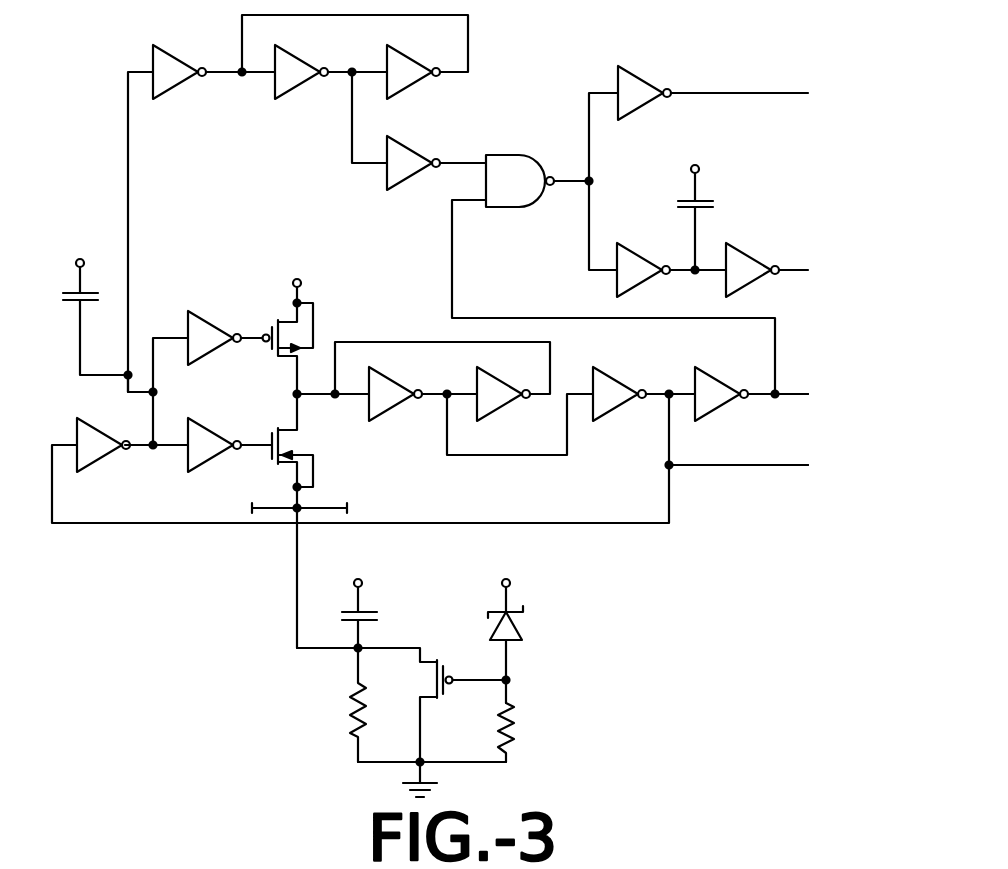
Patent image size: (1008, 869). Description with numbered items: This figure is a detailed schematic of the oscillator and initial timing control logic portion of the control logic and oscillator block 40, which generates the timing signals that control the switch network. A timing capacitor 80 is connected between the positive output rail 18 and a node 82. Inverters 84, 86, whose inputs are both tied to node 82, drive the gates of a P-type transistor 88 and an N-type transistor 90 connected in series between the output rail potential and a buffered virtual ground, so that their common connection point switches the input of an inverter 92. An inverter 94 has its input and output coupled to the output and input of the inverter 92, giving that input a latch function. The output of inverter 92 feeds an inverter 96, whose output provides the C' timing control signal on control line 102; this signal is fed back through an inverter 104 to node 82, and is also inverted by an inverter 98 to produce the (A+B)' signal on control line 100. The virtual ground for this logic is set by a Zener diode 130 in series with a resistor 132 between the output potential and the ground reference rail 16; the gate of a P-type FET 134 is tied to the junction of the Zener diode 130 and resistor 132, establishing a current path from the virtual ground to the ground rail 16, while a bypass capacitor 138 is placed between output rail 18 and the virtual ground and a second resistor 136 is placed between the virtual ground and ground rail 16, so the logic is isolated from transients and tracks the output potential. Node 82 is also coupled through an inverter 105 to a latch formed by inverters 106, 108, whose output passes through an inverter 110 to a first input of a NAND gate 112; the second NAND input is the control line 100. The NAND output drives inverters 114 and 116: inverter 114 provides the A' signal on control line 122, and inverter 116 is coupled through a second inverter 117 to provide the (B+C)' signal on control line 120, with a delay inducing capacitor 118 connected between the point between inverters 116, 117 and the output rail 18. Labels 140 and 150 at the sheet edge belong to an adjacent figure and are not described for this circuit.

The control logic and oscillator block 40 is at (530, 78).
The inverter 105 is at (172, 80).
The inverter 106 is at (300, 78).
The inverter 108 is at (398, 78).
The inverter 110 is at (402, 177).
The NAND gate 112 is at (505, 207).
The inverter 114 is at (637, 78).
The inverter 116 is at (617, 290).
The second inverter 117 is at (742, 282).
The delay inducing capacitor 118 is at (680, 210).
The control line 120 is at (742, 258).
The control line 122 is at (741, 92).
The output rail 18 is at (690, 170).
The timing capacitor 80 is at (73, 312).
The node 82 is at (125, 380).
The inverter 84 is at (205, 352).
The inverter 86 is at (205, 430).
The P-type transistor 88 is at (289, 312).
The N-type transistor 90 is at (293, 440).
The inverter 92 is at (388, 402).
The inverter 94 is at (485, 405).
The inverter 96 is at (608, 410).
The inverter 98 is at (718, 404).
The control line 100 is at (792, 397).
The control line 102 is at (707, 467).
The inverter 104 is at (95, 455).
The ground reference voltage potential rail 16 is at (325, 506).
The Zener diode 130 is at (515, 618).
The resistor 132 is at (512, 715).
The P-type FET 134 is at (438, 679).
The second resistor 136 is at (350, 712).
The bypass capacitor 138 is at (378, 617).
The reference (adjacent figure) 140 is at (246, 868).
The reference (adjacent figure) 150 is at (674, 866).